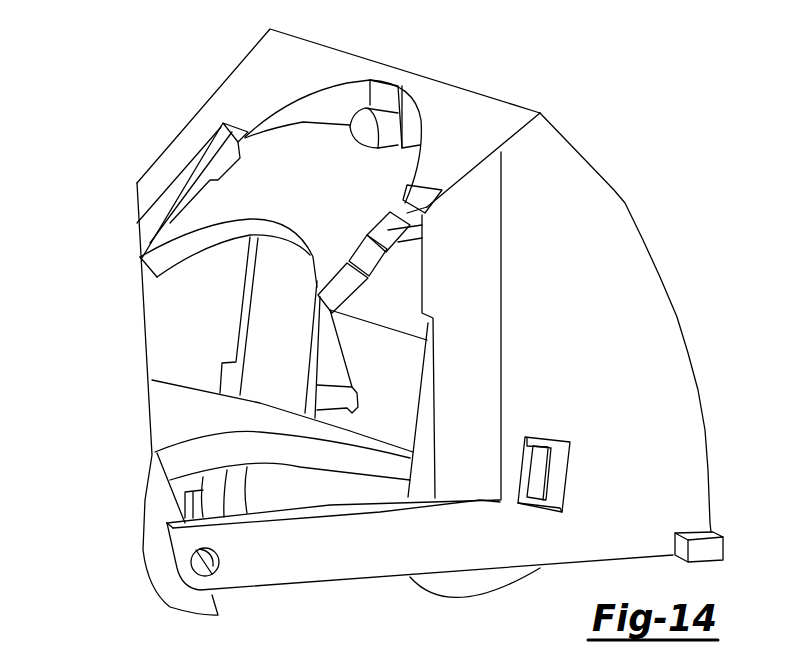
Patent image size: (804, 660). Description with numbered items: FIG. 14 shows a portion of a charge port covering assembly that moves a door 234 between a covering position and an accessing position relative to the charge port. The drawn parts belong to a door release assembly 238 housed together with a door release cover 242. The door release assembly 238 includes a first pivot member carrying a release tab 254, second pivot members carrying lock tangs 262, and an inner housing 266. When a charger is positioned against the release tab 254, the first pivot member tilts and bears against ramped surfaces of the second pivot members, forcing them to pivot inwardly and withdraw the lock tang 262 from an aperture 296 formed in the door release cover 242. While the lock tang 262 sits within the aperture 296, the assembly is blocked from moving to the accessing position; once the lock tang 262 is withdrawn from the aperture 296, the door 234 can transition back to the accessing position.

The door release assembly 238 is at (108, 313).
The door release cover 242 is at (558, 192).
The door 234 is at (173, 418).
The release tab 254 is at (368, 132).
The inner housing 266 is at (402, 398).
The lock tang 262 is at (540, 478).
The aperture 296 is at (563, 458).